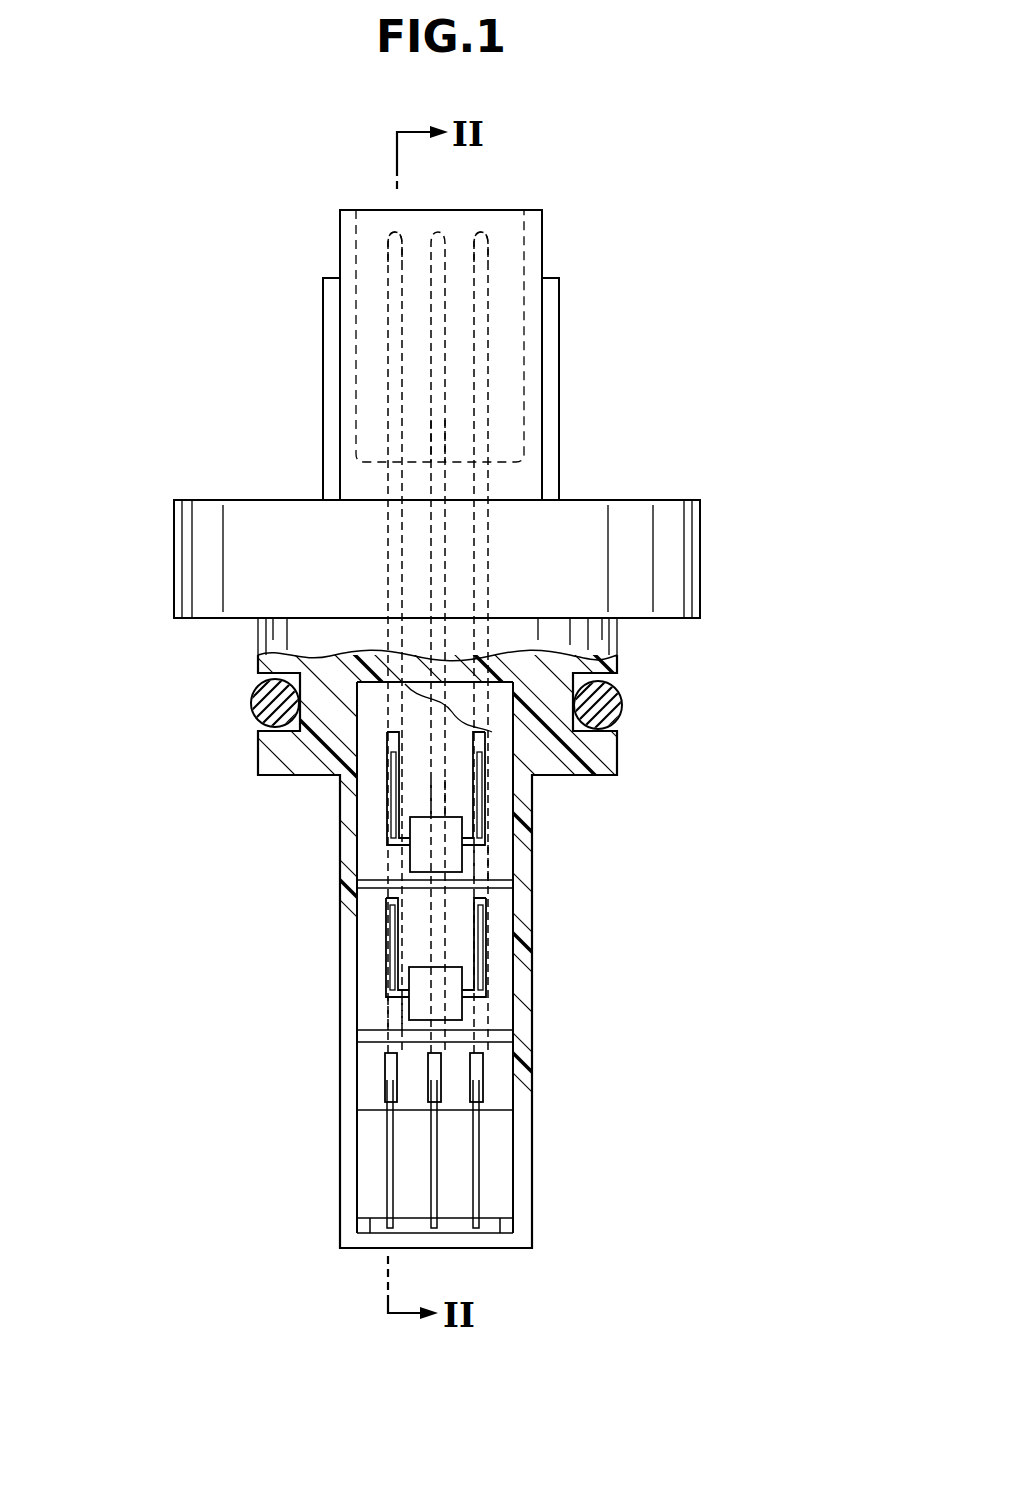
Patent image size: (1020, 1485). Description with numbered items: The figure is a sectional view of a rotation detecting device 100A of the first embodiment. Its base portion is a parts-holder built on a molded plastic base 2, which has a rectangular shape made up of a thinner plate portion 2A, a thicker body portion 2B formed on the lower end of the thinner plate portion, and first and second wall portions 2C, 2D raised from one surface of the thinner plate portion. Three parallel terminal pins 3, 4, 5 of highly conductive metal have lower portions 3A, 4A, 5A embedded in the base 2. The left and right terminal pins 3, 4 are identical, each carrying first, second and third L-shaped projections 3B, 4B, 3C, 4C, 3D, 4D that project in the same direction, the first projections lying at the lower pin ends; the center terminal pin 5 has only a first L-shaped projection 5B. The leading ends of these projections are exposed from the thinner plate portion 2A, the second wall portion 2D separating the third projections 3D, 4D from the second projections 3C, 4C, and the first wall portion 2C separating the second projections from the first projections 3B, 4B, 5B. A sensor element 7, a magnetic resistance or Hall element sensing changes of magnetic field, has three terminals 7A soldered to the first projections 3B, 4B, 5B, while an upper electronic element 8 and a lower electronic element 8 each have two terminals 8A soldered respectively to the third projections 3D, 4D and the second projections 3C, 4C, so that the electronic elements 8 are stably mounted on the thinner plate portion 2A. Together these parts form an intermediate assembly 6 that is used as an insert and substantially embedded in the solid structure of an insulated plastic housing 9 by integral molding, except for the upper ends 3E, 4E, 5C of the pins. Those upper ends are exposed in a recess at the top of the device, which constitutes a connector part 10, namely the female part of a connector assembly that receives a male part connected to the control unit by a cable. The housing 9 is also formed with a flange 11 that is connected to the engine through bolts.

The rotation detecting device 100A is at (755, 153).
The plastic base 2 is at (605, 700).
The thinner plate portion 2A is at (372, 988).
The thicker body portion 2B is at (366, 1137).
The first wall portion 2C is at (507, 1036).
The second wall portion 2D is at (507, 887).
The left terminal pin 3 is at (395, 312).
The lower portion of left terminal pin 3A is at (392, 1013).
The first L-shaped projection of left terminal pin 3B is at (387, 1072).
The second L-shaped projection of left terminal pin 3C is at (385, 918).
The third L-shaped projection of left terminal pin 3D is at (390, 740).
The upper end of left terminal pin 3E is at (395, 262).
The right terminal pin 4 is at (480, 400).
The lower portion of right terminal pin 4A is at (480, 853).
The first L-shaped projection of right terminal pin 4B is at (483, 1075).
The second L-shaped projection of right terminal pin 4C is at (482, 920).
The third L-shaped projection of right terminal pin 4D is at (505, 752).
The upper end of right terminal pin 4E is at (485, 340).
The center terminal pin 5 is at (437, 378).
The lower portion of center terminal pin 5A is at (432, 797).
The first L-shaped projection of center terminal pin 5B is at (430, 1055).
The upper end of center terminal pin 5C is at (437, 438).
The intermediate assembly 6 is at (545, 1128).
The sensor element 7 is at (390, 1228).
The terminal of sensor element 7A is at (390, 1183).
The electronic element 8 is at (420, 858).
The terminal of electronic element 8A is at (405, 828).
The housing 9 is at (706, 520).
The connector part 10 is at (532, 295).
The flange 11 is at (182, 590).